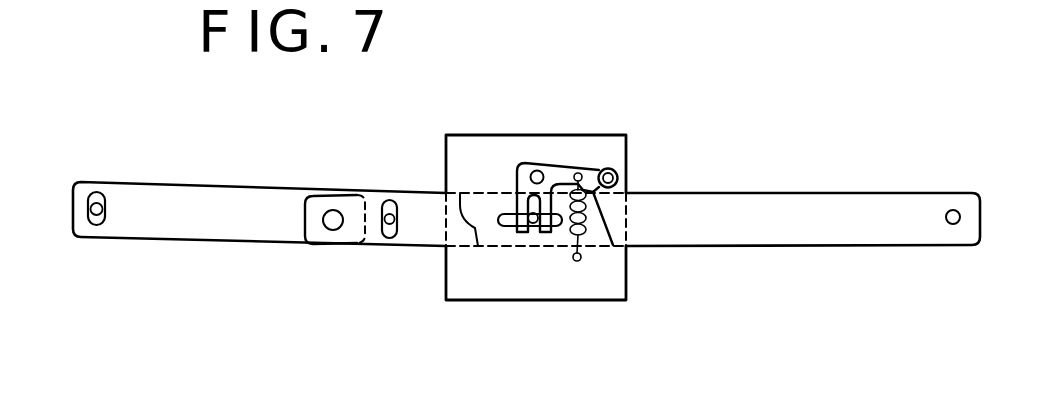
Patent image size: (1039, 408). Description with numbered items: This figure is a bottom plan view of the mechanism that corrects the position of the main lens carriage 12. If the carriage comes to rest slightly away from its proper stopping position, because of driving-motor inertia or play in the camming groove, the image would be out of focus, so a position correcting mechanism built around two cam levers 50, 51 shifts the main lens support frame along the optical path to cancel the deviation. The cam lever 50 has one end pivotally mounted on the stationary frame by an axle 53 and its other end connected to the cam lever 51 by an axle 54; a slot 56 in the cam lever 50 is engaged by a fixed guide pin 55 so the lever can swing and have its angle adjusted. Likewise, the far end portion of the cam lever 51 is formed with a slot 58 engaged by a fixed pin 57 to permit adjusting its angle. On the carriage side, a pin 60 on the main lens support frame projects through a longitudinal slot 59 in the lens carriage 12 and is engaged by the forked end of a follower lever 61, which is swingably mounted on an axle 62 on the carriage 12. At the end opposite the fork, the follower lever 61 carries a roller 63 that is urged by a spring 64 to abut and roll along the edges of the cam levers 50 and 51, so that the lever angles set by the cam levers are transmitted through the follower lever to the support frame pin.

The main lens carriage 12 is at (501, 291).
The cam lever 50 is at (827, 196).
The cam lever 51 is at (207, 193).
The axle 53 is at (953, 210).
The axle 54 is at (334, 210).
The fixed guide pin 55 is at (379, 233).
The slot 56 is at (390, 200).
The fixed pin 57 is at (103, 209).
The slot 58 is at (97, 226).
The longitudinal slot 59 is at (500, 217).
The pin 60 is at (532, 226).
The follower lever 61 is at (566, 168).
The axle 62 is at (538, 170).
The roller 63 is at (620, 170).
The spring 64 is at (586, 216).